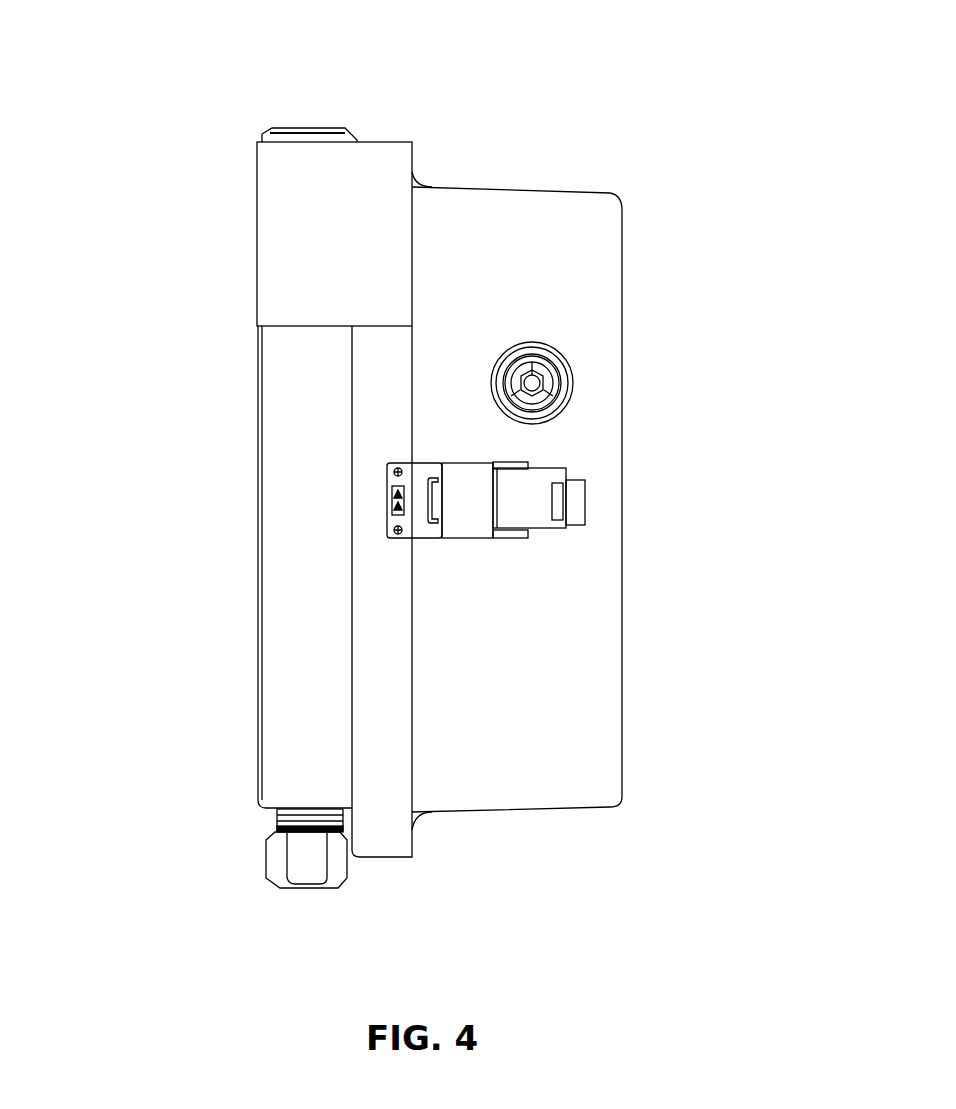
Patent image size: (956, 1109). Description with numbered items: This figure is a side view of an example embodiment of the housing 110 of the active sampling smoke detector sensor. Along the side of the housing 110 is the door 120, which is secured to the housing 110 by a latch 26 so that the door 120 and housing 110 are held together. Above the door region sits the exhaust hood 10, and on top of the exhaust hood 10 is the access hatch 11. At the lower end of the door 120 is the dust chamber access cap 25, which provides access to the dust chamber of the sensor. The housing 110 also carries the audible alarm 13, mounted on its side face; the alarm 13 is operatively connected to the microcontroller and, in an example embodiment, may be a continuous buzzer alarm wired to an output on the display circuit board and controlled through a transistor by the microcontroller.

The exhaust hood 10 is at (318, 235).
The access hatch 11 is at (290, 126).
The audible alarm 13 is at (576, 387).
The dust chamber access cap 25 is at (276, 815).
The latch 26 is at (565, 527).
The housing 110 is at (623, 780).
The door 120 is at (258, 573).